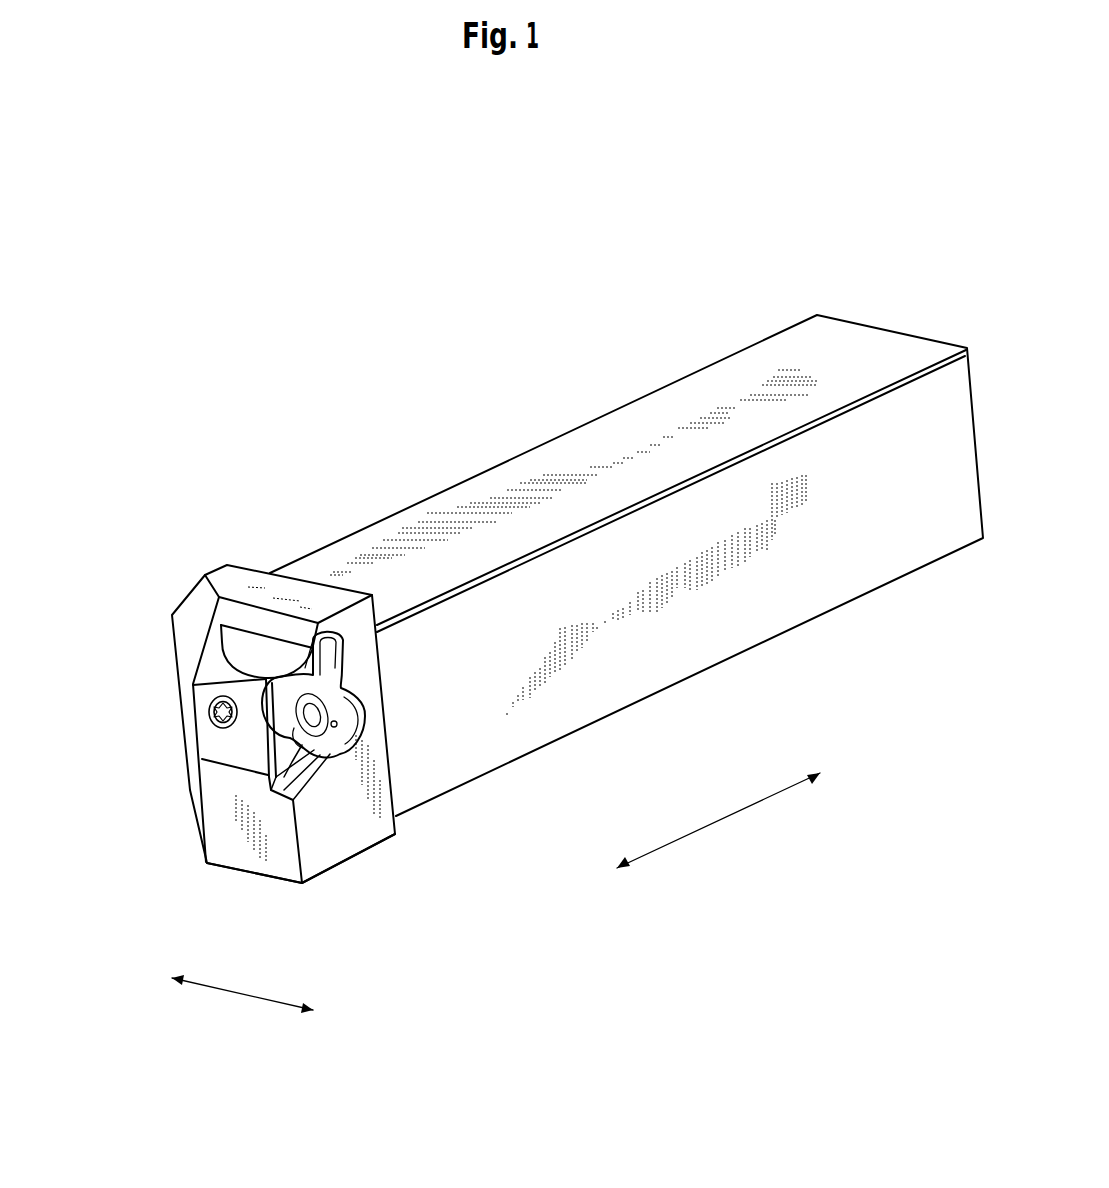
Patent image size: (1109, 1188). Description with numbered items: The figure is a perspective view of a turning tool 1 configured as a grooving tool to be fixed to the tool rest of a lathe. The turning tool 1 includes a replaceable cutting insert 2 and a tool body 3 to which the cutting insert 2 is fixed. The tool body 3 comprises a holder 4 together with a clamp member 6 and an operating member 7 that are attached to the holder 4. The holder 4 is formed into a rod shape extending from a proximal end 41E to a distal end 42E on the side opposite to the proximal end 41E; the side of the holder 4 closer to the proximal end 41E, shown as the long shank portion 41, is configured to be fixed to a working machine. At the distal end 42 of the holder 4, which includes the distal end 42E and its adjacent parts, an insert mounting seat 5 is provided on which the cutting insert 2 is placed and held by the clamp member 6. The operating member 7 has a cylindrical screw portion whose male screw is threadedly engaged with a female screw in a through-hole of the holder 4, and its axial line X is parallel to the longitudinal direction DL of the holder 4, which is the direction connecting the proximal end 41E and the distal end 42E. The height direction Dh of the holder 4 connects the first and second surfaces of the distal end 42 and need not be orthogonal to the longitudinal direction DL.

The turning tool 1 is at (507, 1013).
The cutting insert 2 is at (262, 690).
The tool body 3 is at (468, 481).
The holder 4 is at (603, 447).
The proximal end portion 41 is at (790, 337).
The proximal end 41E is at (882, 328).
The distal end portion 42 is at (265, 578).
The distal end 42E is at (233, 750).
The insert mounting seat 5 is at (288, 797).
The clamp member 6 is at (325, 753).
The operating member 7 is at (208, 713).
The axial line X is at (212, 718).
The longitudinal direction DL is at (718, 820).
The height direction Dh is at (242, 999).